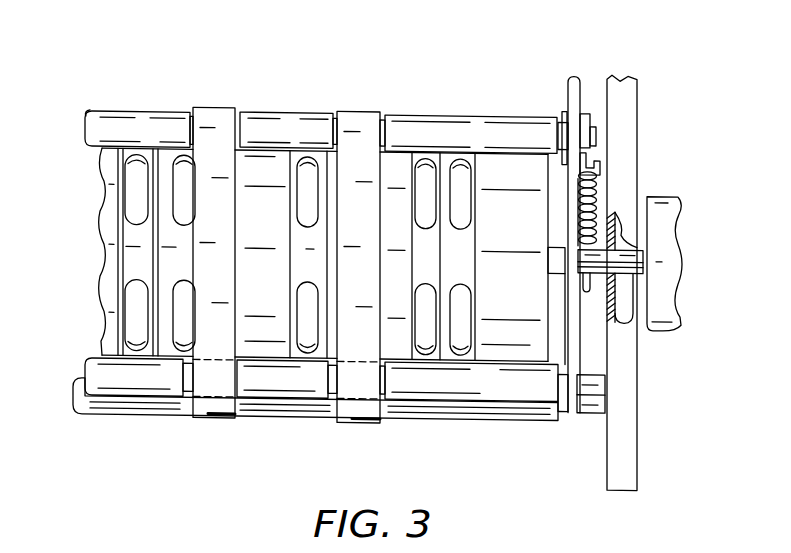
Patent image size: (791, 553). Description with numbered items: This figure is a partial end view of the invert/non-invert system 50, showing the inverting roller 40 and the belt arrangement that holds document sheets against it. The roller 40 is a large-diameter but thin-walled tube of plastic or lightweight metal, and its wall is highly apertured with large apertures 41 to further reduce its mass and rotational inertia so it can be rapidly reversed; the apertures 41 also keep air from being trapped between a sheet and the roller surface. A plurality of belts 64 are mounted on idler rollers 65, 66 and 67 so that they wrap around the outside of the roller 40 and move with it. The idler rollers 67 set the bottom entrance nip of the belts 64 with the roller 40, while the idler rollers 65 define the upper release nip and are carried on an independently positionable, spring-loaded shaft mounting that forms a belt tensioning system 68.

The inverting roller 40 is at (110, 277).
The apertures 41 is at (305, 158).
The invert/non-invert system 50 is at (370, 265).
The belts 64 is at (222, 409).
The idler rollers 65 is at (528, 120).
The idler rollers 66 is at (500, 380).
The idler rollers 67 is at (158, 408).
The belt tensioning system 68 is at (596, 199).